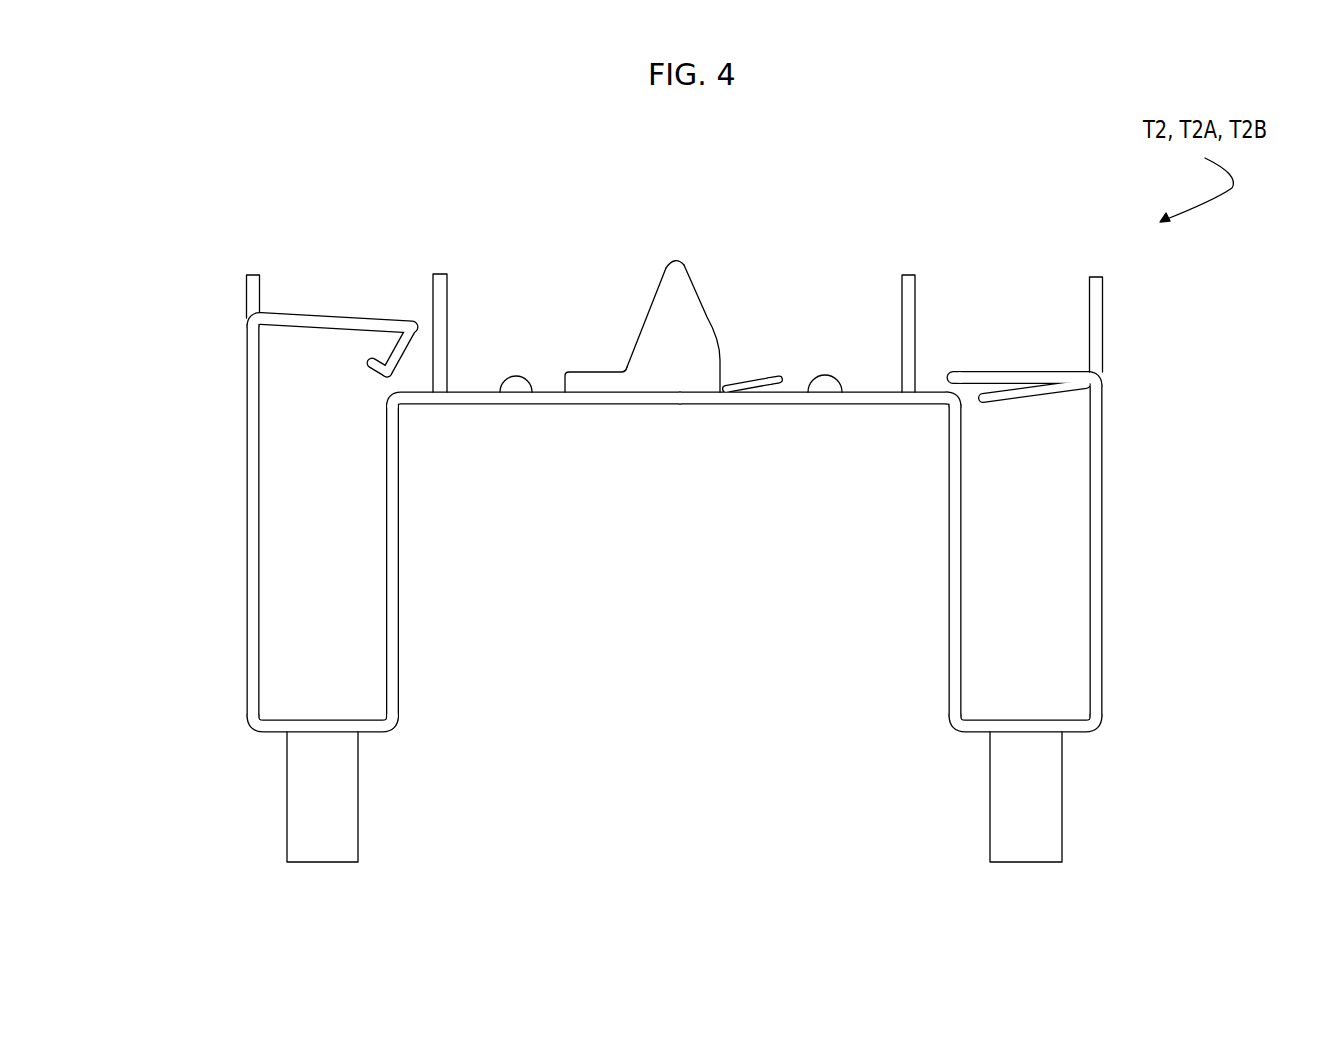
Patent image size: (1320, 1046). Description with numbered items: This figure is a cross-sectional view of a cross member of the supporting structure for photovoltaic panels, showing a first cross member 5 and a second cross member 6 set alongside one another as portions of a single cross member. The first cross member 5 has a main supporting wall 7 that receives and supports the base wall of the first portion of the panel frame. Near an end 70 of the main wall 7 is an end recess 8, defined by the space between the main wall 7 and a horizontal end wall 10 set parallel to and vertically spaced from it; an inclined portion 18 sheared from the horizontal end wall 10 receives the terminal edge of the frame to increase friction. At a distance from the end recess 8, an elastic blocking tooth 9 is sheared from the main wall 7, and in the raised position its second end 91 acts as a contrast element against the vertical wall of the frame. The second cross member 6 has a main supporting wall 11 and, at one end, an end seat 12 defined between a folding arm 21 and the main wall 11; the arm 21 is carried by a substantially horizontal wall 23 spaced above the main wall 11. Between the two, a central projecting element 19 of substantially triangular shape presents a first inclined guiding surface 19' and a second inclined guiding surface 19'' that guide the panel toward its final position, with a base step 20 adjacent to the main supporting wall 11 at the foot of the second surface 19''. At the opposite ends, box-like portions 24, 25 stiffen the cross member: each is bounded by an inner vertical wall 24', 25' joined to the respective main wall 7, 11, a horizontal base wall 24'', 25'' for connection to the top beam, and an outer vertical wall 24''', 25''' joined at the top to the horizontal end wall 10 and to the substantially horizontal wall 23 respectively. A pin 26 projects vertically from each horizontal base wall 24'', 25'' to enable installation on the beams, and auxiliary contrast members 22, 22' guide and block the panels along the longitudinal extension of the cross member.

The first cross member 5 is at (852, 356).
The second cross member 6 is at (513, 338).
The main supporting wall 7 is at (840, 392).
The end recess 8 is at (946, 384).
The elastic blocking tooth 9 is at (760, 378).
The horizontal end wall 10 is at (1007, 370).
The main supporting wall 11 is at (500, 392).
The end seat 12 is at (384, 379).
The inclined portion 18 is at (1015, 399).
The central projecting element 19 is at (674, 290).
The first inclined guiding surface 19' is at (725, 328).
The second inclined guiding surface 19'' is at (624, 310).
The base step 20 is at (594, 372).
The arm 21 is at (392, 348).
The auxiliary contrast member 22 is at (696, 297).
The auxiliary contrast member 22' is at (697, 294).
The substantially horizontal wall 23 is at (318, 312).
The box-like portion 24 is at (1044, 556).
The inner vertical wall 24' is at (910, 561).
The horizontal base wall 24'' is at (1025, 688).
The outer vertical wall 24''' is at (1060, 551).
The box-like portion 25 is at (300, 526).
The inner vertical wall 25' is at (430, 561).
The horizontal base wall 25'' is at (323, 685).
The outer vertical wall 25''' is at (292, 521).
The pin 26 is at (343, 807).
The end of the main wall 70 is at (946, 412).
The second end of the tooth 91 is at (790, 381).